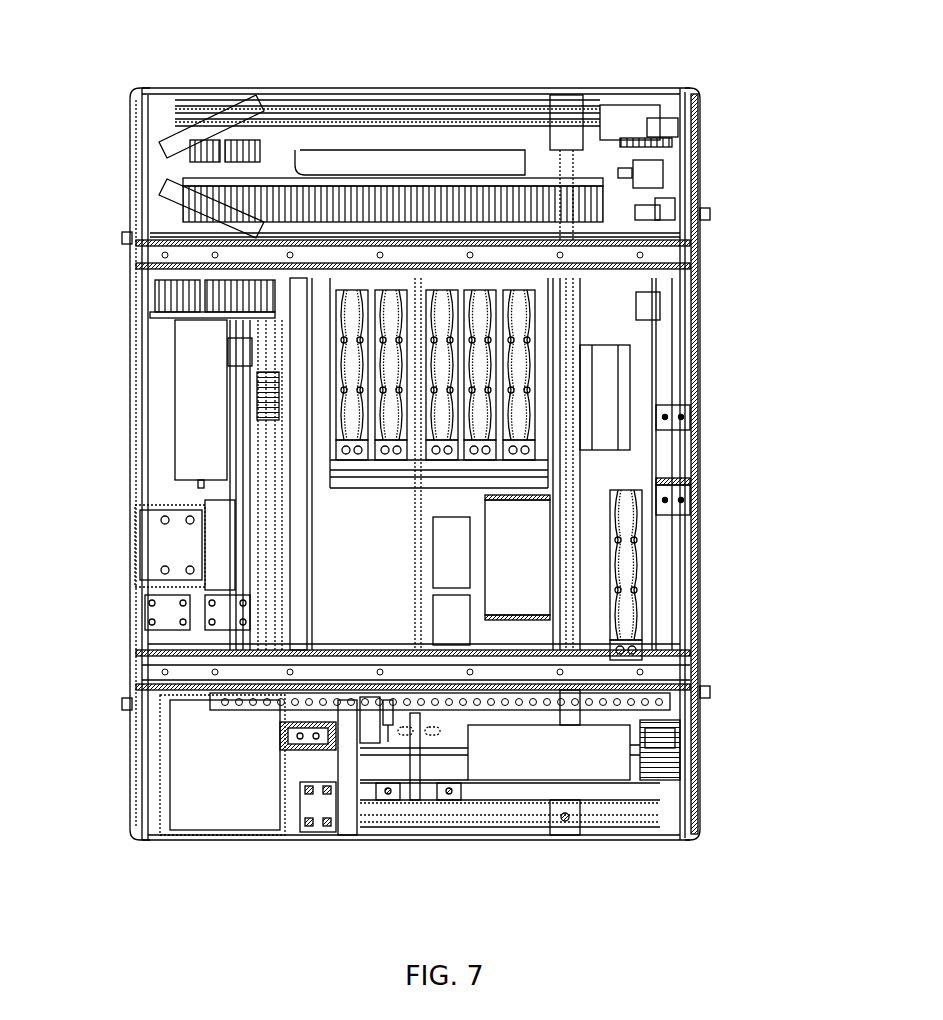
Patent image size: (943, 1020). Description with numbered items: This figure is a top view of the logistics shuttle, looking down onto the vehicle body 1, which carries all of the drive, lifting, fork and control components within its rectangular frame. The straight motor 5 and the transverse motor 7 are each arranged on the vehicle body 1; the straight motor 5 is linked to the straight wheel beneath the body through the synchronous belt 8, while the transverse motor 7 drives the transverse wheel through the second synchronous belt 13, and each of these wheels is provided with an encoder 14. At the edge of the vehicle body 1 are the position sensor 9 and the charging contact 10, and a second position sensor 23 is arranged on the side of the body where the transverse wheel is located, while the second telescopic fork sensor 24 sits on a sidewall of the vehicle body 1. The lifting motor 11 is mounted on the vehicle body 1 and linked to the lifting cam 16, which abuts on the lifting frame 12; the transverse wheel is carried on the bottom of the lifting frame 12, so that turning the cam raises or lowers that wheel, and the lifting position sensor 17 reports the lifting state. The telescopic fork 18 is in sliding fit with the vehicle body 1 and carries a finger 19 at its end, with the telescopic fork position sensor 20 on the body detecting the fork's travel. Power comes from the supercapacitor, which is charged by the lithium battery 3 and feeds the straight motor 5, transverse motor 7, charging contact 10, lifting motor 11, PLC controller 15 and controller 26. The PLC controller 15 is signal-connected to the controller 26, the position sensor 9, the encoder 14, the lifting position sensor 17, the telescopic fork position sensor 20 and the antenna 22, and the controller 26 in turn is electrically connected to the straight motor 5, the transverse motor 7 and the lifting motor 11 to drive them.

The vehicle body 1 is at (665, 375).
The lithium battery 3 is at (215, 735).
The straight motor 5 is at (680, 655).
The transverse motor 7 is at (210, 450).
The synchronous belt 8 is at (585, 745).
The position sensor 9 is at (665, 510).
The charging contact 10 is at (180, 540).
The lifting motor 11 is at (455, 560).
The lifting frame 12 is at (430, 800).
The second synchronous belt 13 is at (255, 130).
The encoder 14 is at (690, 122).
The PLC controller 15 is at (365, 715).
The lifting cam 16 is at (700, 275).
The lifting position sensor 17 is at (655, 812).
The telescopic fork 18 is at (700, 210).
The finger 19 is at (700, 255).
The telescopic fork position sensor 20 is at (450, 718).
The antenna 22 is at (200, 95).
The second position sensor 23 is at (448, 800).
The second telescopic fork sensor 24 is at (128, 700).
The controller 26 is at (515, 580).